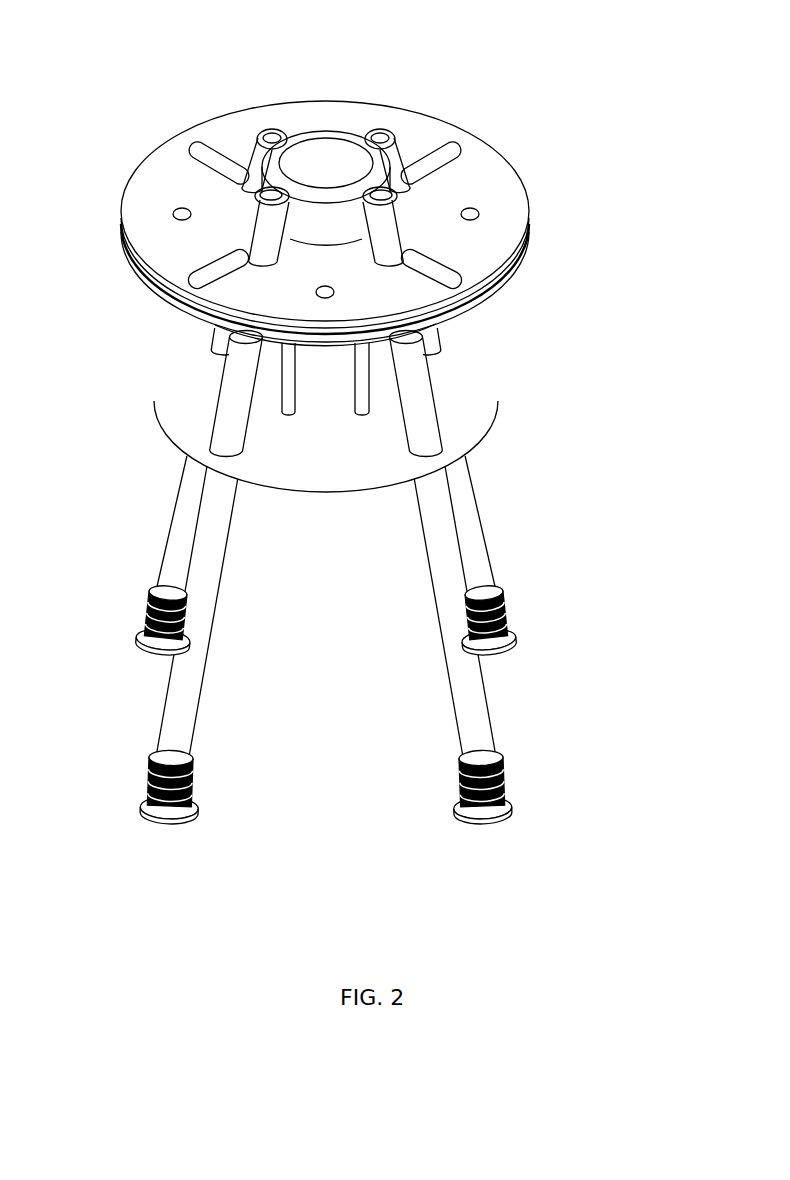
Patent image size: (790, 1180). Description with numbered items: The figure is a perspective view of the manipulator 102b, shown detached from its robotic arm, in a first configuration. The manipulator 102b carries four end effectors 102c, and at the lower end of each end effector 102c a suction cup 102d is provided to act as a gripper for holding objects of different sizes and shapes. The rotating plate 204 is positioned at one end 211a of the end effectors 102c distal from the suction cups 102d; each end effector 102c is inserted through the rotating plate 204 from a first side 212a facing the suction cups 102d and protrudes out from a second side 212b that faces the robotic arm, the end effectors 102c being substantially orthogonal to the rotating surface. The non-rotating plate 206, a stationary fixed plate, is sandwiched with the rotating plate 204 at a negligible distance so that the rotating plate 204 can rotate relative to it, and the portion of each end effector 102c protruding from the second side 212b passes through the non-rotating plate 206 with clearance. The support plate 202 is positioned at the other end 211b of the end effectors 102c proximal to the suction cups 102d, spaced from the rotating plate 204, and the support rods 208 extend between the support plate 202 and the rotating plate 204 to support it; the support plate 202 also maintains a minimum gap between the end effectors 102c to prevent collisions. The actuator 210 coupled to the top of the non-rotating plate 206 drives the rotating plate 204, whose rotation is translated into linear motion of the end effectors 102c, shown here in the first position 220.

The manipulator 102b is at (200, 68).
The support plate 202 is at (462, 421).
The rotating plate 204 is at (470, 318).
The non-rotating plate 206 is at (483, 238).
The support rods 208 is at (280, 385).
The actuator 210 is at (350, 155).
The one end of the end effectors 211a is at (650, 108).
The other end of the end effectors 211b is at (643, 431).
The first side of the rotating plate 212a is at (455, 330).
The second side of the rotating plate 212b is at (180, 285).
The first position 220 is at (267, 207).
The end effectors 102c is at (480, 570).
The suction cups 102d is at (500, 783).